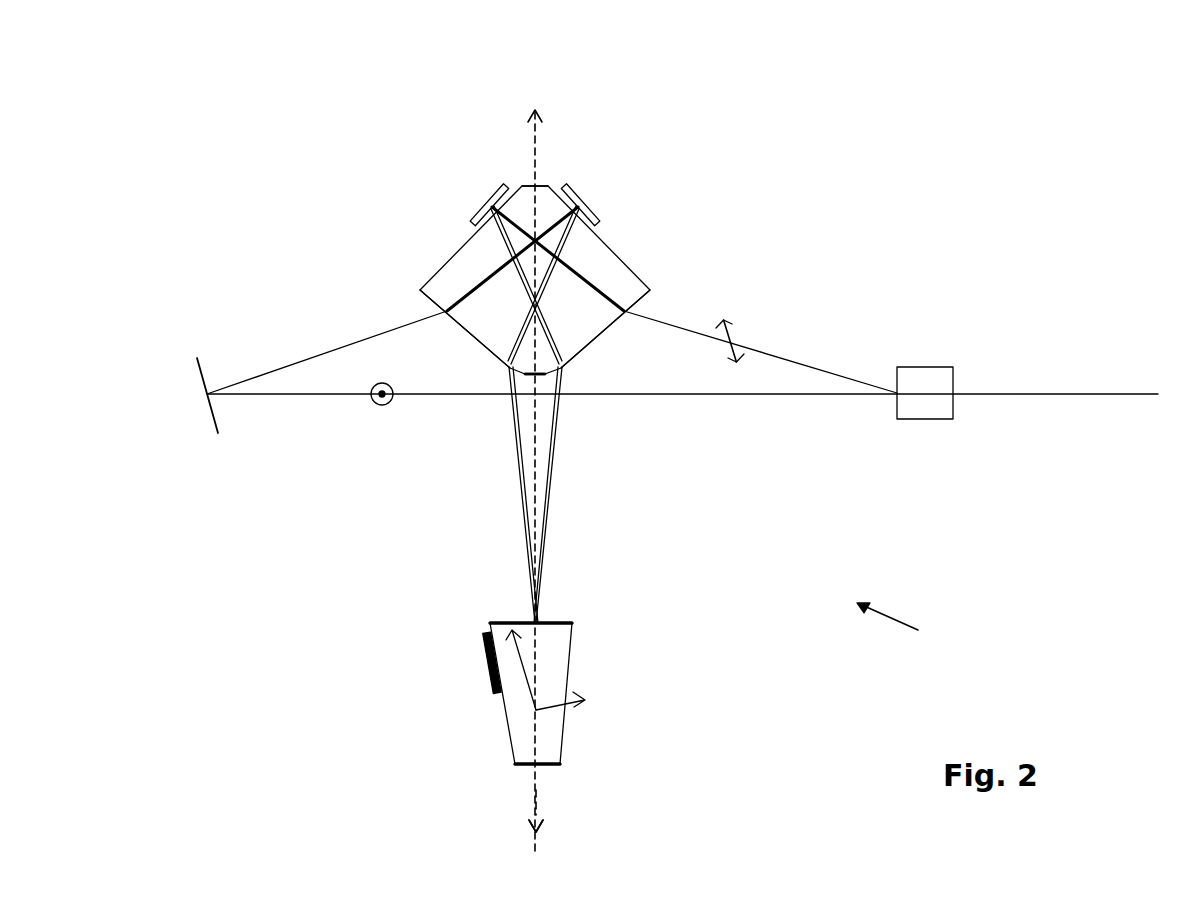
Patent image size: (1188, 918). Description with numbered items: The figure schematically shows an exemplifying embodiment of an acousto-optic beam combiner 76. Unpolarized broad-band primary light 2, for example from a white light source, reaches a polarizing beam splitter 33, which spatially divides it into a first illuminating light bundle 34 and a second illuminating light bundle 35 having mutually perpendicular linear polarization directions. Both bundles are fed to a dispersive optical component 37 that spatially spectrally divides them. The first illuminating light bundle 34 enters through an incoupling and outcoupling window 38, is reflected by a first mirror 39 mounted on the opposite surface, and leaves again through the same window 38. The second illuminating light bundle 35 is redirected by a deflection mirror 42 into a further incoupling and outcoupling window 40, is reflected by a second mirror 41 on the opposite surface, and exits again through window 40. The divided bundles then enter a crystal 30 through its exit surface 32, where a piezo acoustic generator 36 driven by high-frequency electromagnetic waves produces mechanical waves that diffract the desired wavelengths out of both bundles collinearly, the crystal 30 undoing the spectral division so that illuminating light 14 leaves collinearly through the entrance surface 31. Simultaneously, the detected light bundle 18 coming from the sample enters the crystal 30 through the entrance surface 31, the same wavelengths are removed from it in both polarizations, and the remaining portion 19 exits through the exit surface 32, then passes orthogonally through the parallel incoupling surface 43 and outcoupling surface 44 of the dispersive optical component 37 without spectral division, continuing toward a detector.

The primary light 2 is at (1062, 393).
The illuminating light 14 is at (538, 802).
The detected light bundle 18 is at (533, 848).
The remaining portion of detected light bundle 19 is at (537, 152).
The crystal 30 is at (566, 637).
The entrance surface 31 is at (517, 767).
The exit surface 32 is at (550, 621).
The polarizing beam splitter 33 is at (923, 405).
The first illuminating light bundle 34 is at (683, 326).
The second illuminating light bundle 35 is at (418, 398).
The piezo acoustic generator 36 is at (487, 668).
The dispersive optical component 37 is at (613, 263).
The incoupling and outcoupling window 38 is at (613, 326).
The first mirror 39 is at (488, 200).
The further incoupling and outcoupling window 40 is at (436, 302).
The second mirror 41 is at (582, 200).
The deflection mirror 42 is at (214, 421).
The incoupling surface 43 is at (547, 372).
The outcoupling surface 44 is at (532, 186).
The acousto-optic beam combiner 76 is at (911, 628).